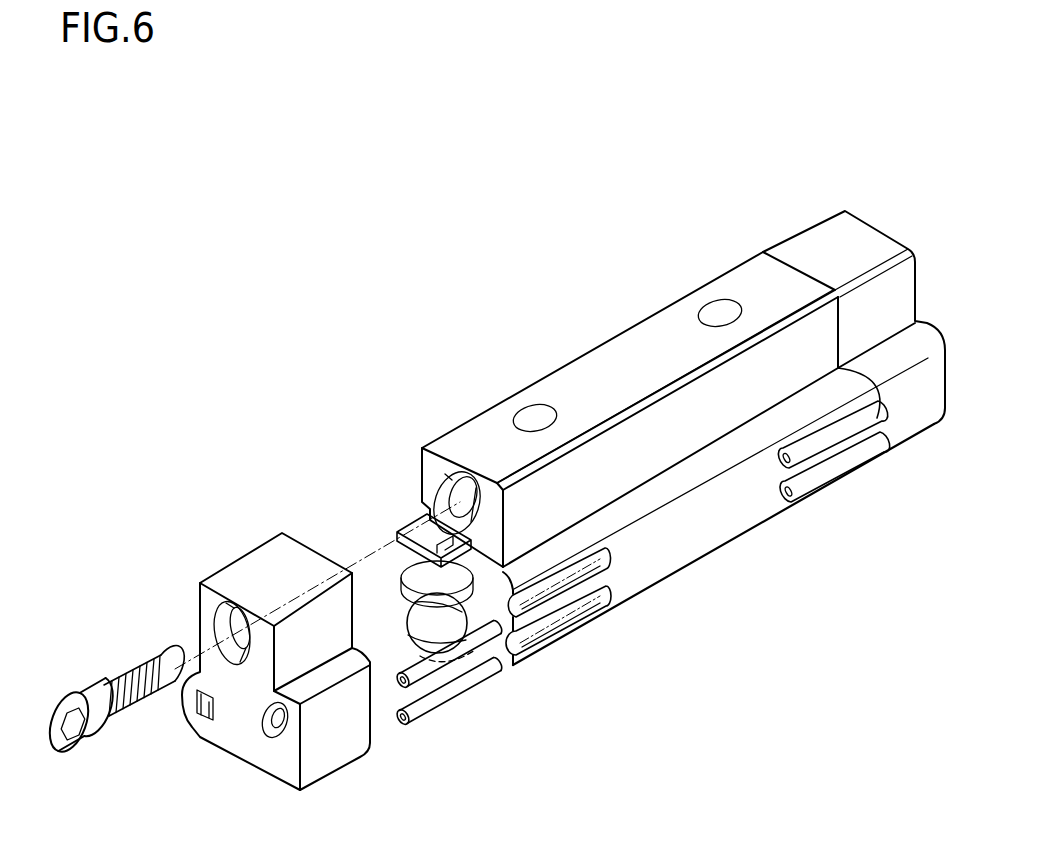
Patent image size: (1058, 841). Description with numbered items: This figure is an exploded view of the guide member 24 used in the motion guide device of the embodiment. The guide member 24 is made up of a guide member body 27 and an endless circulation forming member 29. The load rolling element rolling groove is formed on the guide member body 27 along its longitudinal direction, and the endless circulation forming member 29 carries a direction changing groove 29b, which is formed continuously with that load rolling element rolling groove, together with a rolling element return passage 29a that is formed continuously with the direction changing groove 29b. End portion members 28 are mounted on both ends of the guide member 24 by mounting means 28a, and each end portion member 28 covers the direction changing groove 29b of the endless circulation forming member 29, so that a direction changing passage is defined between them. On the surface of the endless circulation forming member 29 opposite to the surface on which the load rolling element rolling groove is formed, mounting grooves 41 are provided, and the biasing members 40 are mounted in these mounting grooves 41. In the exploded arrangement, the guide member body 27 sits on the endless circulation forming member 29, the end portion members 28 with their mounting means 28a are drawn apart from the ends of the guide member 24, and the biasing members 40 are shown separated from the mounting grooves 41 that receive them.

The guide member 24 is at (730, 178).
The guide member body 27 is at (628, 345).
The end portion member 28 is at (857, 233).
The mounting means 28a is at (122, 675).
The endless circulation forming member 29 is at (693, 533).
The rolling element return passage 29a is at (467, 620).
The direction changing groove 29b is at (400, 556).
The biasing member 40 is at (420, 707).
The mounting groove 41 is at (568, 620).